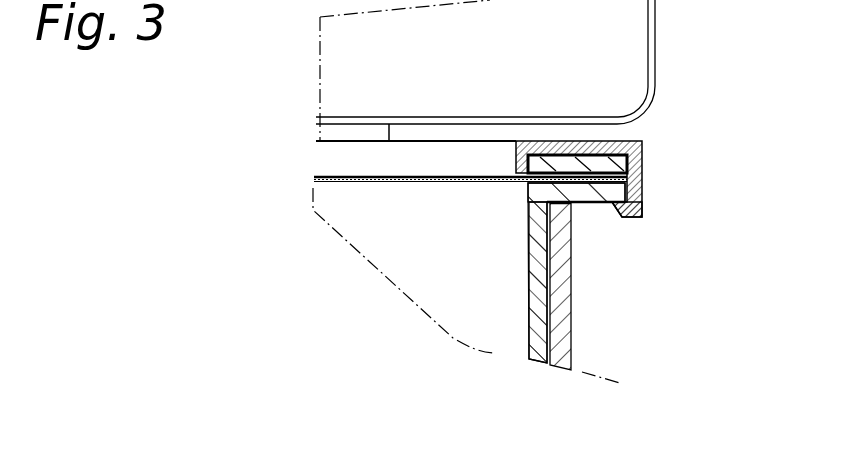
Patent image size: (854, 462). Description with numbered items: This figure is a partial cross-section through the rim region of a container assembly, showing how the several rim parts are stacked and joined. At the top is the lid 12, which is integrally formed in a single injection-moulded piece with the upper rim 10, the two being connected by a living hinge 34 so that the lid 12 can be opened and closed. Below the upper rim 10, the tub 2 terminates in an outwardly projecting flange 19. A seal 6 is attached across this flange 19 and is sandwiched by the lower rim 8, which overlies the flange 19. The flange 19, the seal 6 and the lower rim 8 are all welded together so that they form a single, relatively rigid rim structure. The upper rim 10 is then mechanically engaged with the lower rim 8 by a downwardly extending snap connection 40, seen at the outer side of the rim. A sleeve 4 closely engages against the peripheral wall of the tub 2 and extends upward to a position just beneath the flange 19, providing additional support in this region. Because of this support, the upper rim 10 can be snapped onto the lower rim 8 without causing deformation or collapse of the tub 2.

The tub 2 is at (537, 325).
The sleeve 4 is at (562, 328).
The seal 6 is at (338, 177).
The lower rim 8 is at (628, 160).
The upper rim 10 is at (634, 140).
The lid 12 is at (638, 20).
The flange 19 is at (588, 193).
The living hinge 34 is at (331, 134).
The snap connection 40 is at (625, 215).